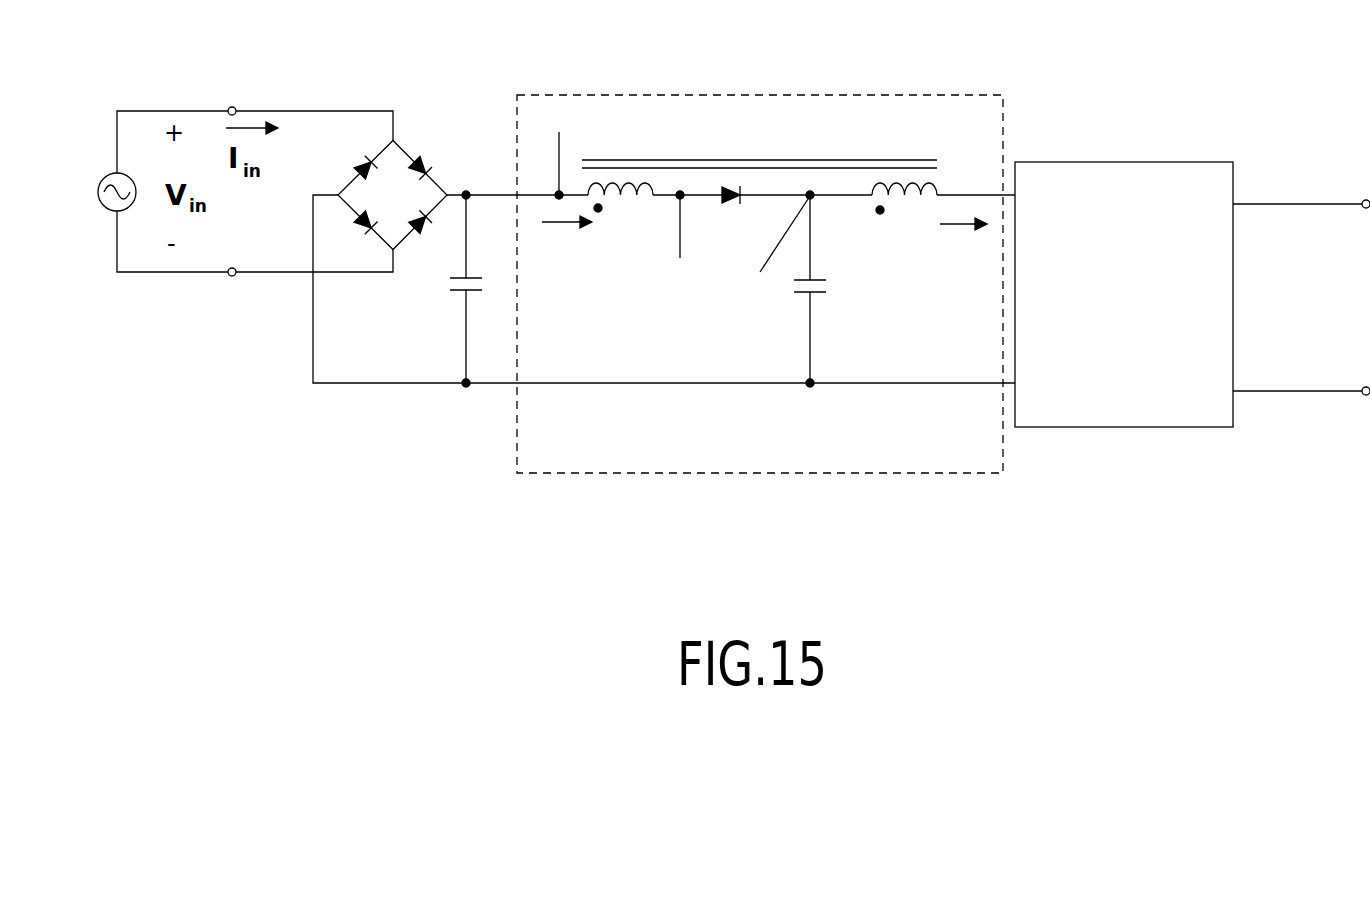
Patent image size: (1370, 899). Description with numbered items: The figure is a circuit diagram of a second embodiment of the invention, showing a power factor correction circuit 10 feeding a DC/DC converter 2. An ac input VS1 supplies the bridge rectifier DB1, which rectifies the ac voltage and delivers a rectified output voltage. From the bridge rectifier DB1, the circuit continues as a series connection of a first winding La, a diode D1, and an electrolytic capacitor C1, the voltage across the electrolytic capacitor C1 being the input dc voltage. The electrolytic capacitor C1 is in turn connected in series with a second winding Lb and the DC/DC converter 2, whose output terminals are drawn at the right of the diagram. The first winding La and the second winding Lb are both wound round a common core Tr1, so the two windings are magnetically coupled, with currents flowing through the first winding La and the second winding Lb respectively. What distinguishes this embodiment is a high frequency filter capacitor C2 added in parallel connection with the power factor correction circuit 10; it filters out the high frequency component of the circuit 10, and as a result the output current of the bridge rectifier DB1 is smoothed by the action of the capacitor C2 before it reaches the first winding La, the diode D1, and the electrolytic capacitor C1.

The power factor correction circuit 10 is at (846, 241).
The DC/DC converter 2 is at (1162, 183).
The ac input VS1 is at (88, 187).
The bridge rectifier DB1 is at (393, 158).
The high frequency filter capacitor C2 is at (442, 289).
The first winding La is at (620, 215).
The diode D1 is at (739, 217).
The electrolytic capacitor C1 is at (832, 289).
The second winding Lb is at (904, 217).
The common core Tr1 is at (759, 139).